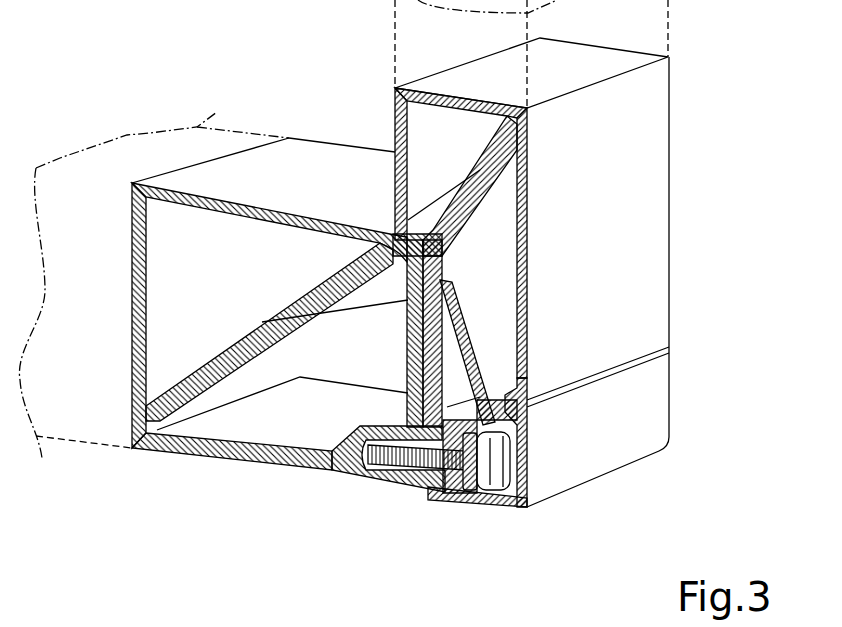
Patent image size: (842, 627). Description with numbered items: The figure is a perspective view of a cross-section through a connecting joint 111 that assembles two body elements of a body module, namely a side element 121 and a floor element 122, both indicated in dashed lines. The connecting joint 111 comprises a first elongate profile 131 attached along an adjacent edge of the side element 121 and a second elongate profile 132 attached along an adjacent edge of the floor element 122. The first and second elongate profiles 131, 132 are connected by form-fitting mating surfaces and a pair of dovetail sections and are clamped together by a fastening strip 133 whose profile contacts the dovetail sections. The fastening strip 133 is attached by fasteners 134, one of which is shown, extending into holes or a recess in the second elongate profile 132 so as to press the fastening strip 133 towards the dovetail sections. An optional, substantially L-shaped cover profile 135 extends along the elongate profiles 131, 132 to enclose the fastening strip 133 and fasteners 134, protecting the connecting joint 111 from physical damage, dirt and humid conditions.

The connecting joint 111 is at (266, 104).
The side element 121 is at (408, 42).
The floor element 122 is at (78, 161).
The first elongate profile 131 is at (653, 176).
The second elongate profile 132 is at (192, 455).
The fastening strip 133 is at (466, 506).
The fastener 134 is at (363, 486).
The cover profile 135 is at (555, 494).